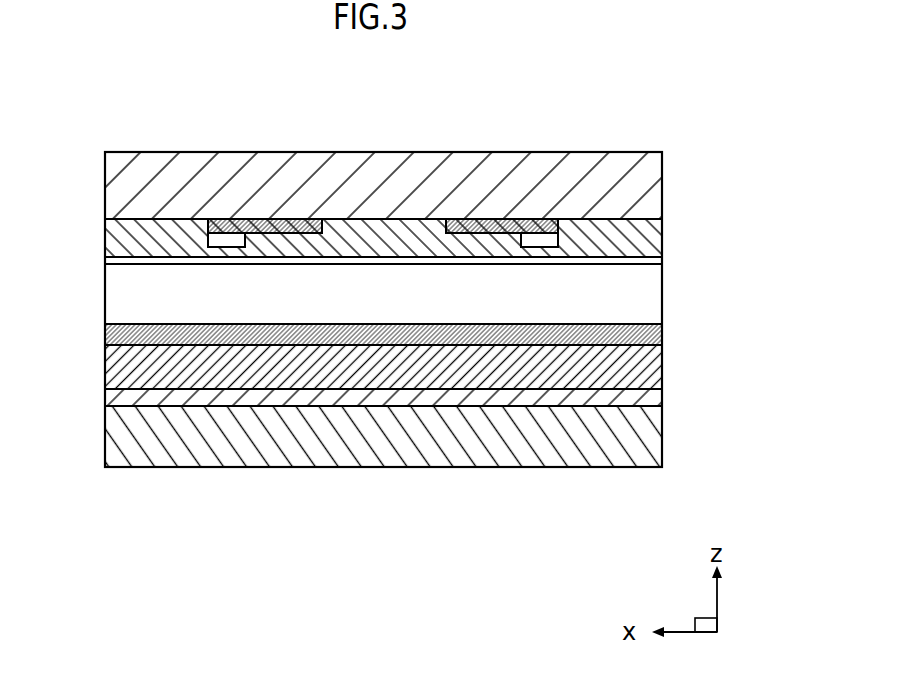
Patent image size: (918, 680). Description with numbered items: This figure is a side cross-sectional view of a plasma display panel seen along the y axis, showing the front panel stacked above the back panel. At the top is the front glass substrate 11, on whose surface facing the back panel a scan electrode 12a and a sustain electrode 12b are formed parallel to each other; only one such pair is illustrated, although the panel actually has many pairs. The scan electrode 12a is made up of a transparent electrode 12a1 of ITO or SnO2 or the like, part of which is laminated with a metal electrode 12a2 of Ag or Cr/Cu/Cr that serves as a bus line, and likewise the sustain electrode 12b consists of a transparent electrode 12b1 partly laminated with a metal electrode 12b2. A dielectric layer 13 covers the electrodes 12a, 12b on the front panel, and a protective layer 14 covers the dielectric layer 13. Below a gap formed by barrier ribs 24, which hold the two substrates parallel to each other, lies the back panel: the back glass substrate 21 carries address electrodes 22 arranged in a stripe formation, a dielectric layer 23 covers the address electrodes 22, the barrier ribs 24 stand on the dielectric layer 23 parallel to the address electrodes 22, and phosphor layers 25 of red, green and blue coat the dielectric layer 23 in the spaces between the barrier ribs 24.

The front glass substrate 11 is at (653, 186).
The dielectric layer 13 is at (653, 241).
The protective layer 14 is at (106, 262).
The barrier ribs 24 is at (110, 308).
The phosphor layers 25 is at (658, 332).
The dielectric layer 23 is at (660, 370).
The address electrodes 22 is at (112, 402).
The back glass substrate 21 is at (653, 449).
The scan electrode 12a is at (460, 205).
The transparent electrode 12a1 is at (515, 228).
The metal electrode 12a2 is at (545, 247).
The sustain electrode 12b is at (305, 205).
The transparent electrode 12b1 is at (248, 223).
The metal electrode 12b2 is at (220, 242).